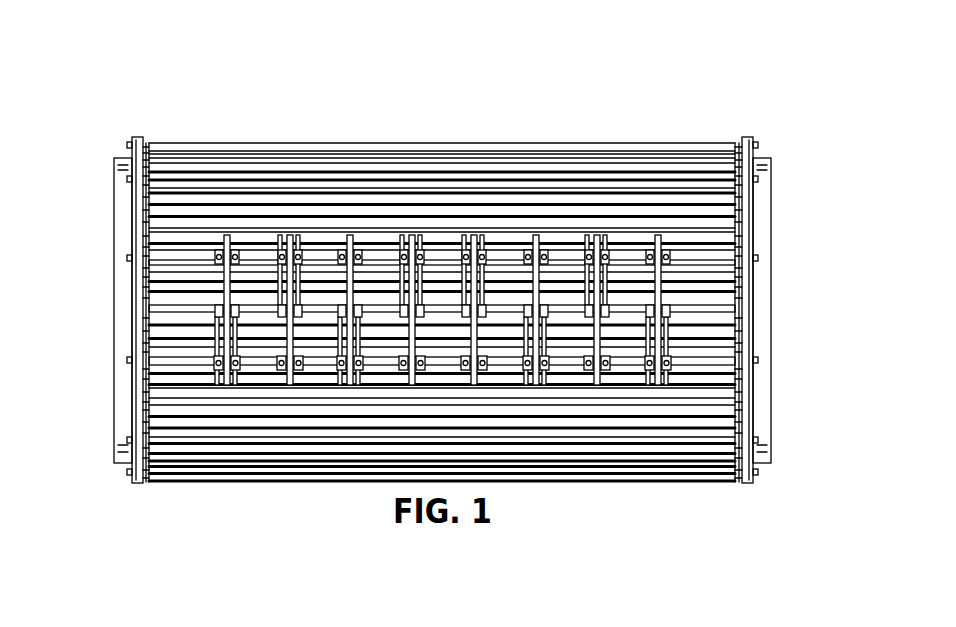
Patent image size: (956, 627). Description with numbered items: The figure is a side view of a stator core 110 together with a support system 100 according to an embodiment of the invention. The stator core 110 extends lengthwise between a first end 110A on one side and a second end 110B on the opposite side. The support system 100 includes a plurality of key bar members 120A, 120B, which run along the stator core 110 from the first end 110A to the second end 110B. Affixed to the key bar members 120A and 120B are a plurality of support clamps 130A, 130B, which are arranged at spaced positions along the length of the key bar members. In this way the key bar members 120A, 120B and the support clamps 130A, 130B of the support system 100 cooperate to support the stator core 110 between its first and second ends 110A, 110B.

The support system 100 is at (505, 127).
The stator core 110 is at (619, 215).
The first end 110A is at (745, 240).
The second end 110B is at (134, 233).
The key bar member 120A is at (686, 258).
The key bar member 120B is at (700, 360).
The support clamp 130A is at (227, 238).
The support clamp 130B is at (290, 238).